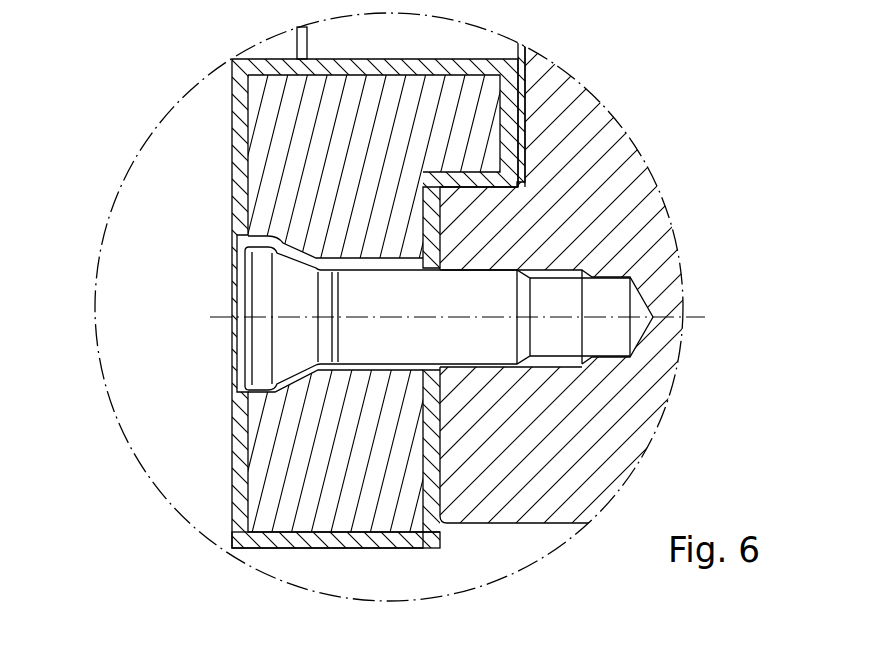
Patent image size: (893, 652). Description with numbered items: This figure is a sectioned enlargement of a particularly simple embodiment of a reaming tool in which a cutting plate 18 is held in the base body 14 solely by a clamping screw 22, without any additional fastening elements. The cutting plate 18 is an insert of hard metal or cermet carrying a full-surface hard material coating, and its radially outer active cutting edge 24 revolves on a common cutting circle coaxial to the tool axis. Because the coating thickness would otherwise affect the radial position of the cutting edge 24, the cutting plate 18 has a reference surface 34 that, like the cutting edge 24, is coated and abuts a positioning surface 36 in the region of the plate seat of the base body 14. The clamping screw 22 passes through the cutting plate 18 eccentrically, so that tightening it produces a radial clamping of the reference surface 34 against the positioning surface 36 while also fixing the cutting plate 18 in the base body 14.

The base body 14 is at (630, 392).
The cutting plate 18 is at (232, 136).
The clamping screw 22 is at (261, 353).
The cutting edge 24 is at (232, 551).
The reference surface 34 is at (503, 188).
The positioning surface 36 is at (506, 188).